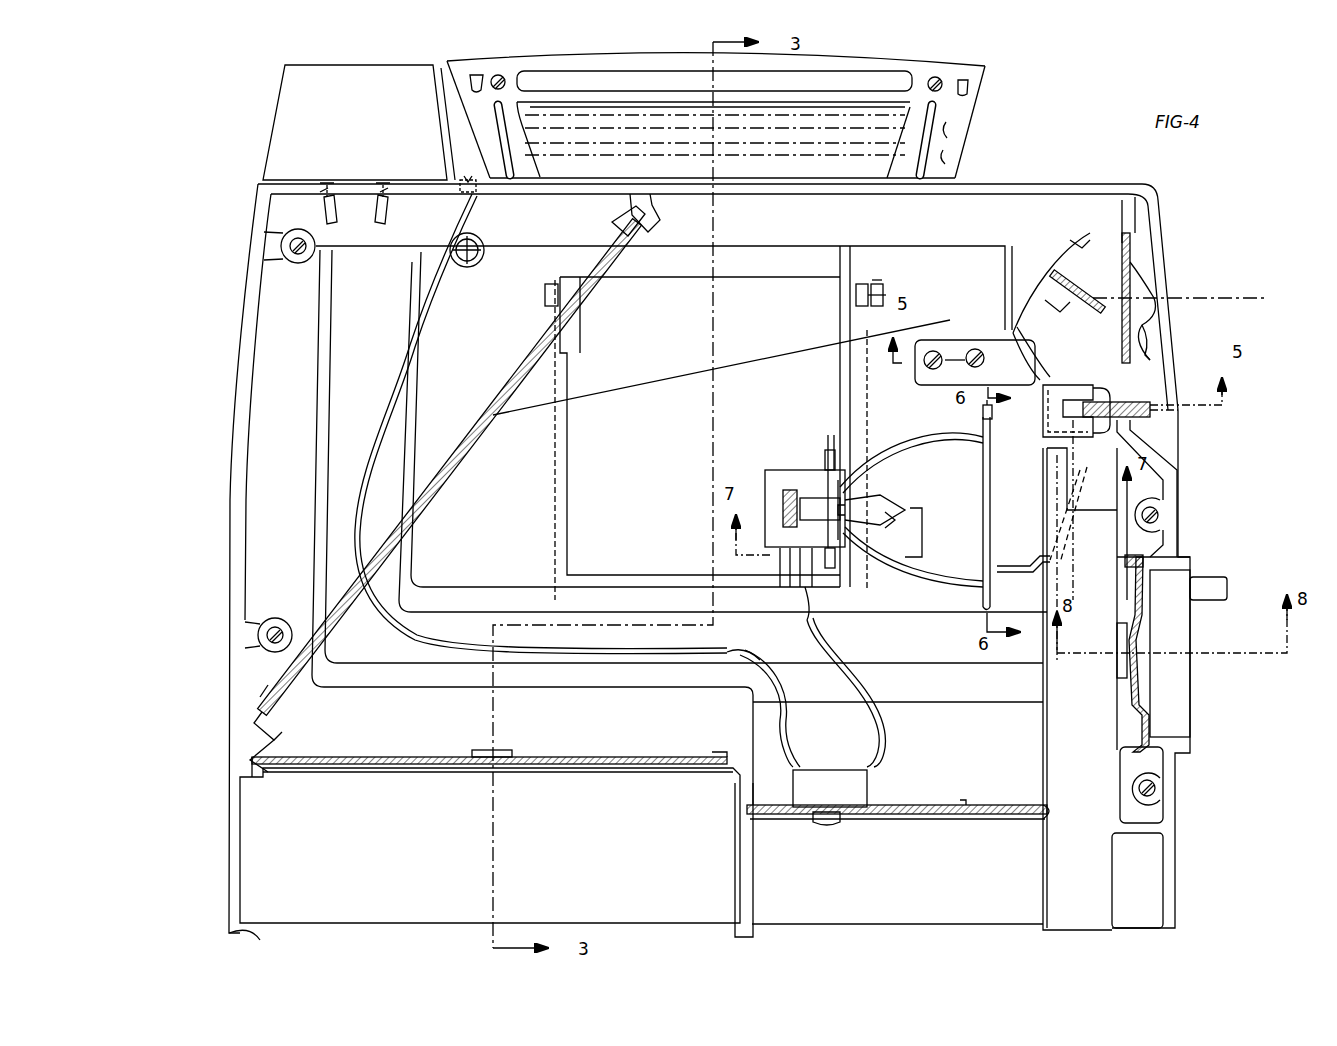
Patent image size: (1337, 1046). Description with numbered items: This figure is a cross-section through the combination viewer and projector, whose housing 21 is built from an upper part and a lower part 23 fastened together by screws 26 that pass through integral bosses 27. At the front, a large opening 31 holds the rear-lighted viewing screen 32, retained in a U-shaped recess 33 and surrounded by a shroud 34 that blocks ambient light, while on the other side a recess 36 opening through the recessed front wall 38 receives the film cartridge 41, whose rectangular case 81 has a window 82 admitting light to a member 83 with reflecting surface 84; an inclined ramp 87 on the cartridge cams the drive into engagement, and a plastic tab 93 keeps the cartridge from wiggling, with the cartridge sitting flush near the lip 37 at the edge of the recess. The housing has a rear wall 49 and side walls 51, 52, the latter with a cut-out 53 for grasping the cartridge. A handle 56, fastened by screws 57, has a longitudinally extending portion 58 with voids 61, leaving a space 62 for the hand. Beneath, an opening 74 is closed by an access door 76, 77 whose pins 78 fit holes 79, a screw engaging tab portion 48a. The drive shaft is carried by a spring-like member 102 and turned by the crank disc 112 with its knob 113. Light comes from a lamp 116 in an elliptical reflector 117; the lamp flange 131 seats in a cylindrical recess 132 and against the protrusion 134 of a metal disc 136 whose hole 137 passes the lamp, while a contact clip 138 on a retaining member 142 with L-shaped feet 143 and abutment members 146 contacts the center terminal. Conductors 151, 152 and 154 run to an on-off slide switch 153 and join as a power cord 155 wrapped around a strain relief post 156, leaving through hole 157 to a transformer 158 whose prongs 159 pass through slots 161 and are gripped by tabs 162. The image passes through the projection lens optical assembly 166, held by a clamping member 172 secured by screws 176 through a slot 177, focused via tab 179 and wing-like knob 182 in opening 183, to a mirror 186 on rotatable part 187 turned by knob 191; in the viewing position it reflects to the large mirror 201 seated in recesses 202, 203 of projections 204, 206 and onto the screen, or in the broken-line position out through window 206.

The housing 21 is at (205, 578).
The lower part of housing 23 is at (236, 306).
The screws 26 is at (270, 620).
The bosses 27 is at (283, 622).
The opening 31 is at (260, 777).
The viewing screen 32 is at (372, 777).
The U-shaped recess 33 is at (275, 757).
The shield or shroud 34 is at (255, 938).
The recess 36 is at (1140, 770).
The lip 37 is at (1045, 825).
The front wall 38 is at (945, 805).
The film cartridge 41 is at (1125, 932).
The tab portion 48a is at (780, 585).
The rear wall 49 is at (1075, 172).
The side wall 51 is at (232, 486).
The side wall 52 is at (1172, 840).
The cut-out 53 is at (1175, 853).
The handle 56 is at (918, 62).
The screws 57 is at (940, 84).
The longitudinally extending portion 58 is at (680, 62).
The voids 61 is at (580, 76).
The space 62 is at (832, 96).
The opening 74 is at (566, 472).
The access door 76 is at (742, 278).
The access door 77 is at (554, 284).
The pins 78 is at (880, 283).
The holes 79 is at (886, 292).
The rectangular case 81 is at (1048, 922).
The window 82 is at (1047, 532).
The member 83 is at (1068, 550).
The reflecting surface 84 is at (1080, 480).
The inclined ramp 87 is at (1160, 575).
The plastic tab 93 is at (1172, 456).
The spring-like member 102 is at (1142, 728).
The crank disc 112 is at (1165, 705).
The knob or handle 113 is at (1225, 580).
The lamp 116 is at (884, 505).
The elliptical reflector 117 is at (945, 588).
The flange 131 is at (846, 478).
The cylindrical recess 132 is at (832, 435).
The protrusion 134 is at (830, 560).
The disc 136 is at (826, 445).
The hole 137 is at (888, 518).
The contact clip 138 is at (790, 502).
The retaining member 142 is at (770, 533).
The L-shaped feet 143 is at (826, 464).
The abutment members 146 is at (812, 590).
The conductor 151 is at (880, 740).
The conductor 152 is at (755, 640).
The on-off slide switch 153 is at (826, 780).
The conductor 154 is at (780, 740).
The power cord 155 is at (955, 150).
The strain relief post 156 is at (468, 268).
The hole 157 is at (483, 198).
The transformer 158 is at (283, 90).
The prongs 159 is at (322, 204).
The slots 161 is at (327, 182).
The tabs 162 is at (330, 220).
The projection lens optical assembly 166 is at (1150, 370).
The clamping member 172 is at (1020, 342).
The screws 176 is at (936, 350).
The slot 177 is at (972, 348).
The tab 179 is at (984, 415).
The wing-like knob 182 is at (1150, 391).
The opening 183 is at (1120, 425).
The mirror 186 is at (1050, 276).
The part 187 is at (1092, 220).
The wing-like knob 191 is at (1160, 330).
The mirror 201 is at (488, 410).
The recess 202 is at (252, 742).
The recess 203 is at (620, 224).
The projection 204 is at (258, 688).
The projection / transparent window 206 is at (666, 176).